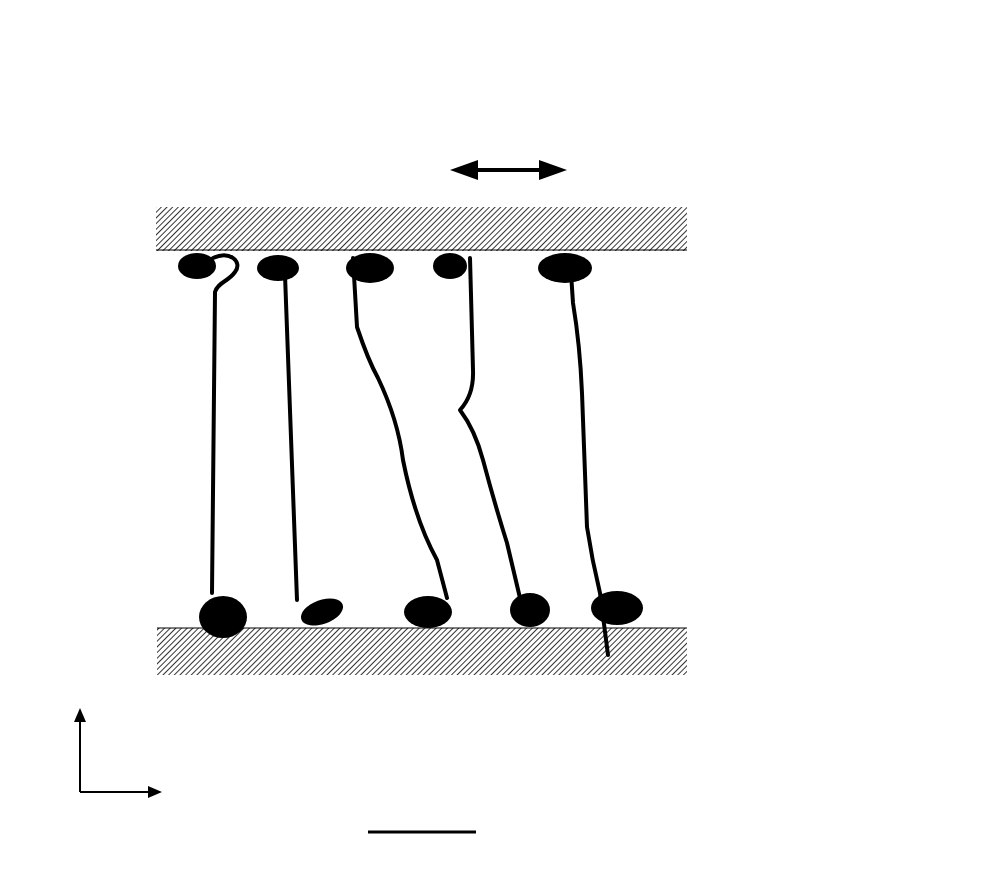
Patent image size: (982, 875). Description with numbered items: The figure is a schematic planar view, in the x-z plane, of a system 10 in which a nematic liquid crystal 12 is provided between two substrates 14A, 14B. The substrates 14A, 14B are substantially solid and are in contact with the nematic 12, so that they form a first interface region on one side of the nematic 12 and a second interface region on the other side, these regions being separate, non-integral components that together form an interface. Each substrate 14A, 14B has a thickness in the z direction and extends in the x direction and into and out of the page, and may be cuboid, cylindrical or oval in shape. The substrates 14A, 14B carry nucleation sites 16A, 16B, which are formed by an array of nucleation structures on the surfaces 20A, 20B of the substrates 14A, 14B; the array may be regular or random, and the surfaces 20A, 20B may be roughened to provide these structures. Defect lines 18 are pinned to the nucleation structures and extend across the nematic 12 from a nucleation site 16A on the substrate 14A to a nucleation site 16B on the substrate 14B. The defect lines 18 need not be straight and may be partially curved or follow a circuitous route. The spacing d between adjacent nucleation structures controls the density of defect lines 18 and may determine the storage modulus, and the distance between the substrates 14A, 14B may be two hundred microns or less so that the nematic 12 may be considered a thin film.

The system 10 is at (129, 117).
The nematic liquid crystal 12 is at (158, 450).
The substrate 14A is at (668, 222).
The substrate 14B is at (680, 657).
The nucleation site 16A is at (560, 253).
The nucleation site 16B is at (620, 603).
The defect line 18 is at (587, 510).
The surface 20A is at (635, 252).
The surface 20B is at (677, 627).